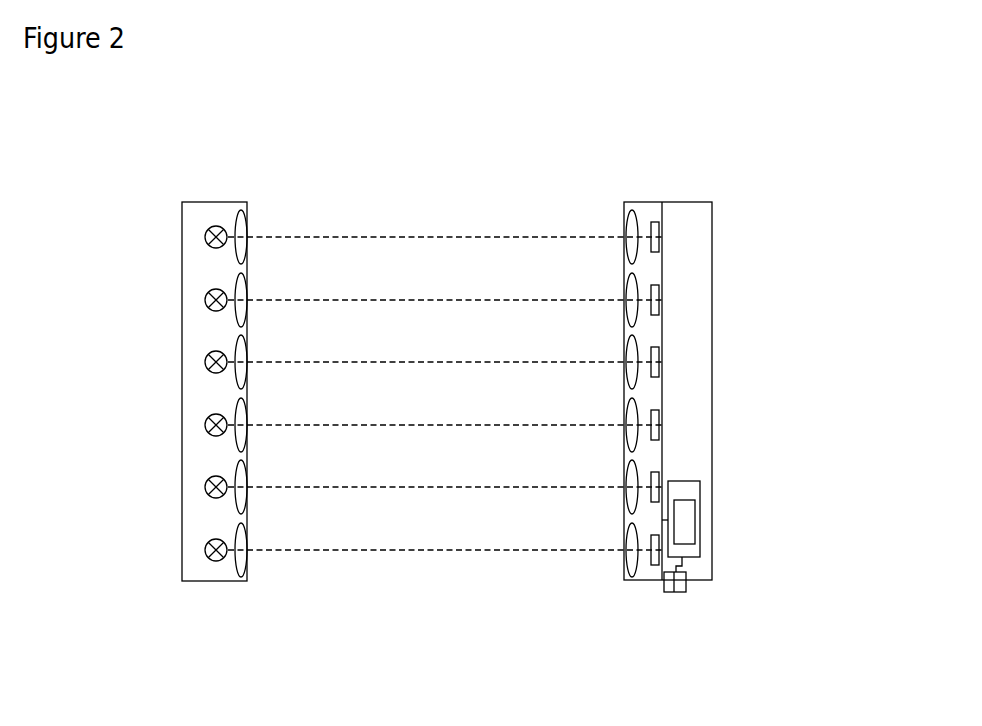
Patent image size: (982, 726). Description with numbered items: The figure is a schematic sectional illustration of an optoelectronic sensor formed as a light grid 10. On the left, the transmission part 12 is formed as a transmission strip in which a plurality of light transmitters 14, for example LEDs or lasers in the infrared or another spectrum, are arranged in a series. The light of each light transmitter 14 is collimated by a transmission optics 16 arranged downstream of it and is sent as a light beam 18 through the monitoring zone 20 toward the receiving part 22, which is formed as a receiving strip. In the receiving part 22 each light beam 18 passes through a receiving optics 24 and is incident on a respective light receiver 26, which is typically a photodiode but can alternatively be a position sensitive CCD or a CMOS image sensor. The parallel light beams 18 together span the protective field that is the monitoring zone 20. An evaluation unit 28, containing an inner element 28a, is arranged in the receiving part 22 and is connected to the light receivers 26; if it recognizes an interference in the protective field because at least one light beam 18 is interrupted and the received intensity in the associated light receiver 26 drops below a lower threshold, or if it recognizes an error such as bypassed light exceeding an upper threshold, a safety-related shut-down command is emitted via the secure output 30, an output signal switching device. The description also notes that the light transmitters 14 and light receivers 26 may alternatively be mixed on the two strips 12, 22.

The light grid 10 is at (553, 183).
The transmission part 12 is at (182, 533).
The light transmitter 14 is at (205, 239).
The transmission optics 16 is at (247, 218).
The light beam 18 is at (516, 555).
The monitoring zone 20 is at (453, 213).
The receiving part 22 is at (713, 535).
The receiving optics 24 is at (632, 208).
The light receiver 26 is at (660, 230).
The evaluation unit 28 is at (688, 482).
The processor 28a is at (688, 527).
The secure output 30 is at (667, 592).